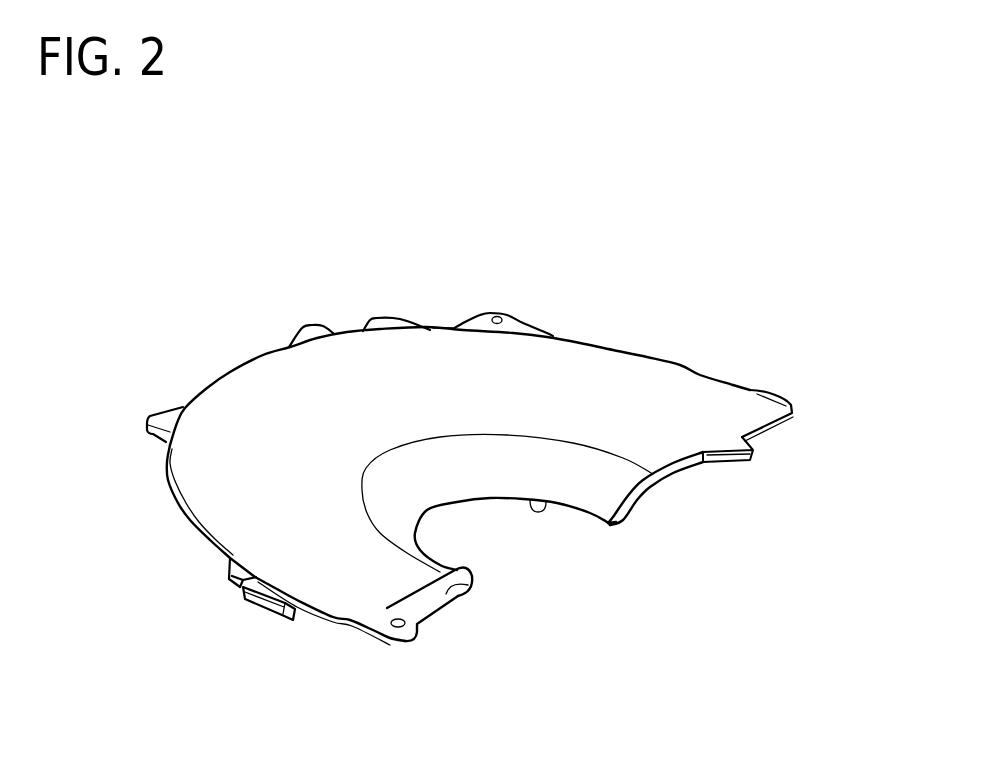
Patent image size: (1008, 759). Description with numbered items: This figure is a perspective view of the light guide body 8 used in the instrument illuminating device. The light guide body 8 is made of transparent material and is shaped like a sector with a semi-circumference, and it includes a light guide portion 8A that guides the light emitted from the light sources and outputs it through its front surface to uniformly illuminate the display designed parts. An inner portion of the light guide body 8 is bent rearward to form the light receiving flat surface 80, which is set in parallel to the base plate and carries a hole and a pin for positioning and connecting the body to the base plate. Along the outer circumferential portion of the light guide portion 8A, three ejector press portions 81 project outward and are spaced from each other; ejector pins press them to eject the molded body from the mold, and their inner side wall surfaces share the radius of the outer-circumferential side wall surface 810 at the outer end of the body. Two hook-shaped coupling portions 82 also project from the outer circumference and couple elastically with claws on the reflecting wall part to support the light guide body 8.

The light guide body 8 is at (676, 362).
The light guide portion 8A is at (260, 400).
The light receiving flat surface 80 is at (470, 600).
The ejector press portion 81 is at (148, 423).
The coupling portion 82 is at (306, 328).
The outer-circumferential side wall surface 810 is at (197, 532).